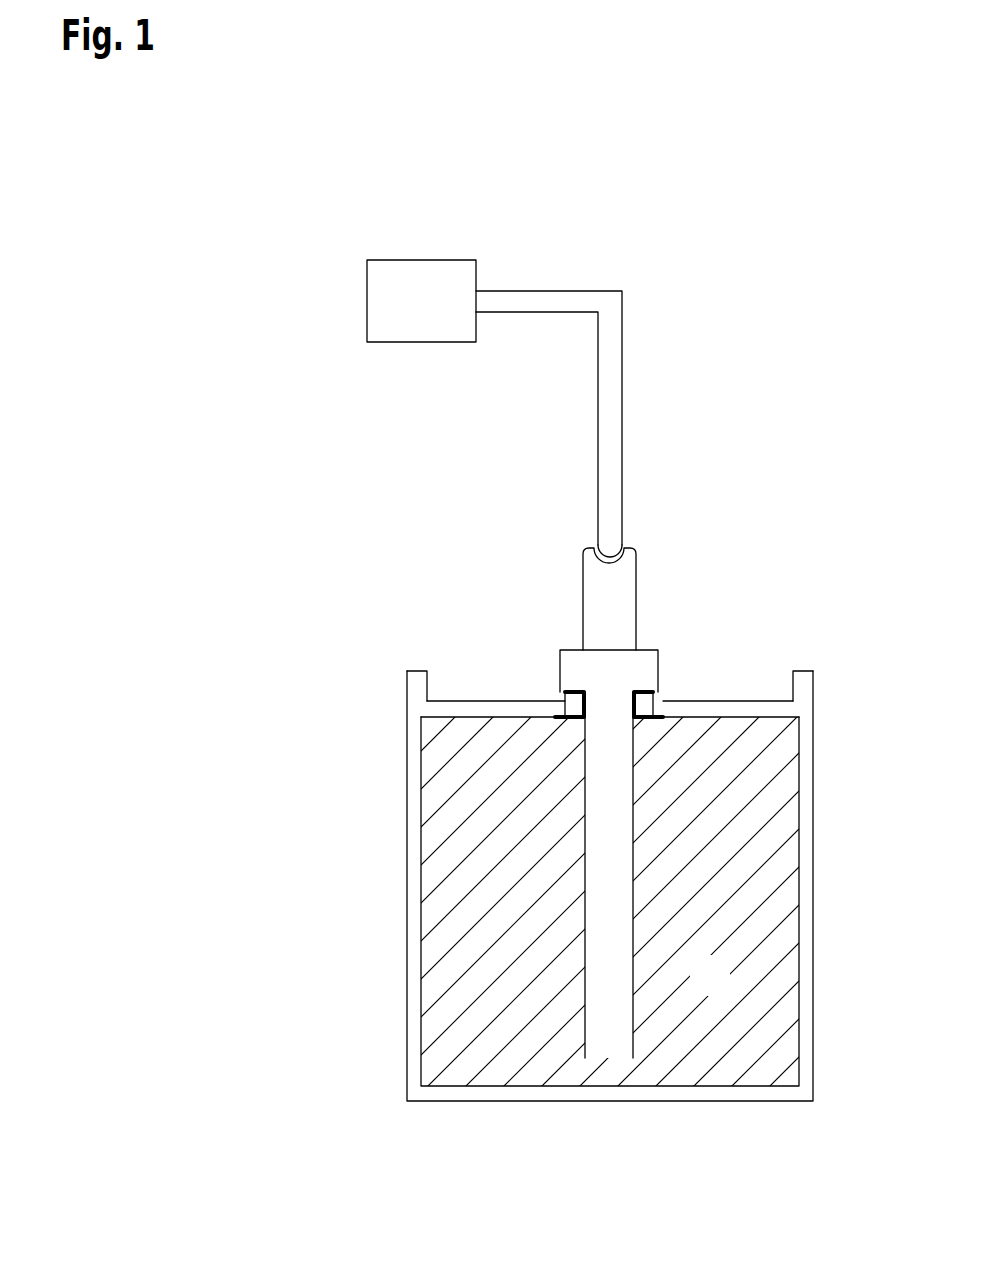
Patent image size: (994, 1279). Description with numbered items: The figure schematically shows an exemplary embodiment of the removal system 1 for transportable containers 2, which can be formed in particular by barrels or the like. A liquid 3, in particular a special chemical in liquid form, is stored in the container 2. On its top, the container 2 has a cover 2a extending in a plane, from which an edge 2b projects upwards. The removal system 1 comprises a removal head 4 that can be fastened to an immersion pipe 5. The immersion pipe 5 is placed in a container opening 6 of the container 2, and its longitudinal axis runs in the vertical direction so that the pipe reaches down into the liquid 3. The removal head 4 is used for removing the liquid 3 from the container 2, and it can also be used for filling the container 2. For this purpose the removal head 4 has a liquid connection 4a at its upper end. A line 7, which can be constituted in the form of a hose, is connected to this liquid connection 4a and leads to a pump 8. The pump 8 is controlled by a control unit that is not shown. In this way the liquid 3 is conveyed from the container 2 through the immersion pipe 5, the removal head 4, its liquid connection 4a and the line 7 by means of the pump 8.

The removal system 1 is at (679, 214).
The container 2 is at (641, 852).
The cover 2a is at (735, 700).
The edge 2b is at (418, 688).
The liquid 3 is at (699, 989).
The removal head 4 is at (600, 619).
The liquid connection 4a is at (597, 548).
The immersion pipe 5 is at (599, 872).
The container opening 6 is at (566, 709).
The line 7 is at (622, 415).
The pump 8 is at (410, 314).